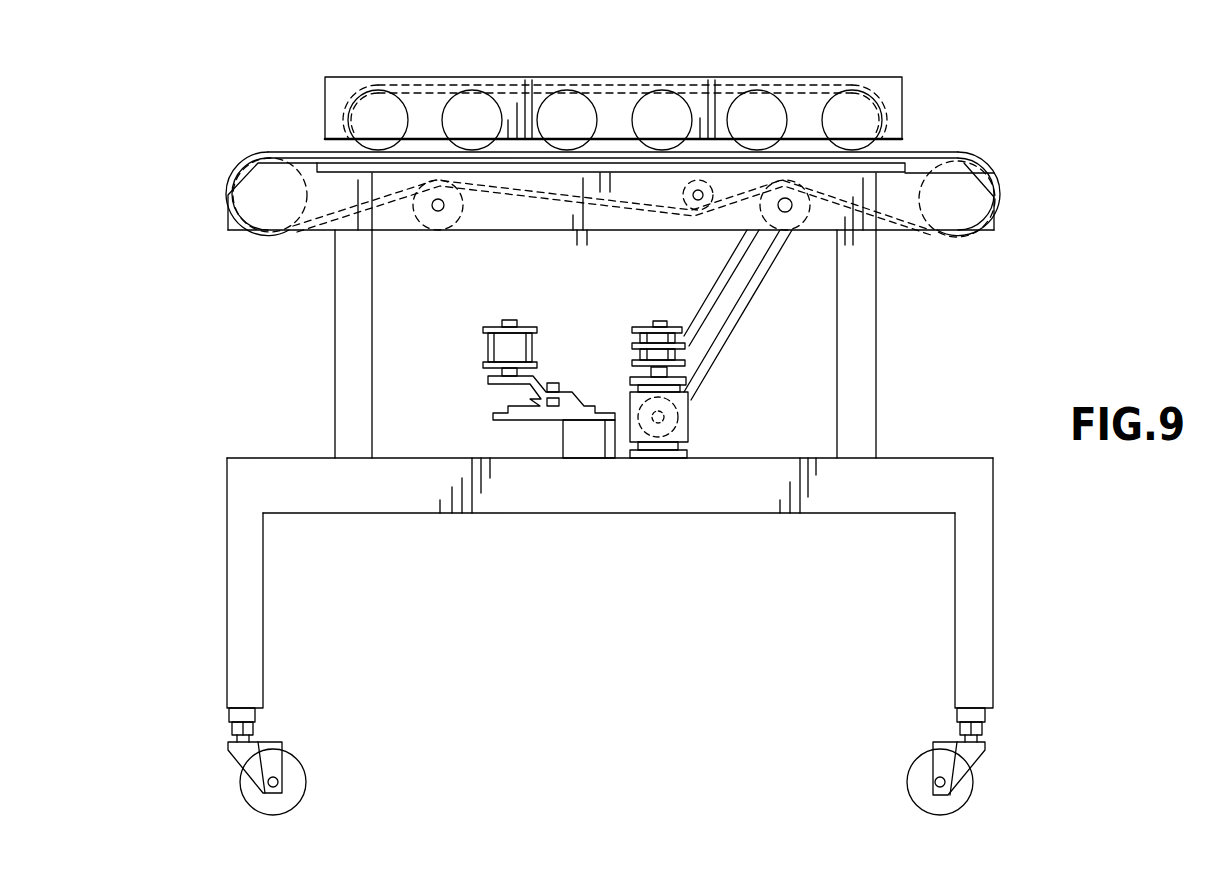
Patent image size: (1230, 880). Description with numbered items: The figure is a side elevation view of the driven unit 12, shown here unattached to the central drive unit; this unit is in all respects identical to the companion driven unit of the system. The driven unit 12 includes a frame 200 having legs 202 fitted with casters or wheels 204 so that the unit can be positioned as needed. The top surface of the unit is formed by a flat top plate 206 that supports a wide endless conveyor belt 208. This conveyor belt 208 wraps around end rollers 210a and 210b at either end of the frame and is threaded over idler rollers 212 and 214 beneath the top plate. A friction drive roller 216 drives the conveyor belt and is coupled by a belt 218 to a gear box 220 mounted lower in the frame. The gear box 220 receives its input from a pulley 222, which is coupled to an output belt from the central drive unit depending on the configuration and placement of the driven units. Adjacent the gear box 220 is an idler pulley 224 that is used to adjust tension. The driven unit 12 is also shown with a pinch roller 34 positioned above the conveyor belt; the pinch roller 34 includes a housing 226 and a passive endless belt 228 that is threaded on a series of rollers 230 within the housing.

The driven unit 12 is at (1135, 288).
The pinch roller 34 is at (890, 87).
The frame 200 is at (876, 363).
The legs 202 is at (263, 584).
The casters or wheels 204 is at (300, 795).
The flat top plate 206 is at (898, 166).
The conveyor belt 208 is at (980, 175).
The end roller 210a is at (994, 218).
The end roller 210b is at (228, 215).
The idler roller 212 is at (458, 224).
The idler roller 214 is at (686, 208).
The friction drive roller 216 is at (803, 225).
The belt 218 is at (748, 310).
The gear box 220 is at (688, 425).
The pulley 222 is at (660, 320).
The idler pulley 224 is at (483, 335).
The housing 226 is at (632, 93).
The passive endless belt 228 is at (423, 86).
The rollers 230 is at (583, 100).